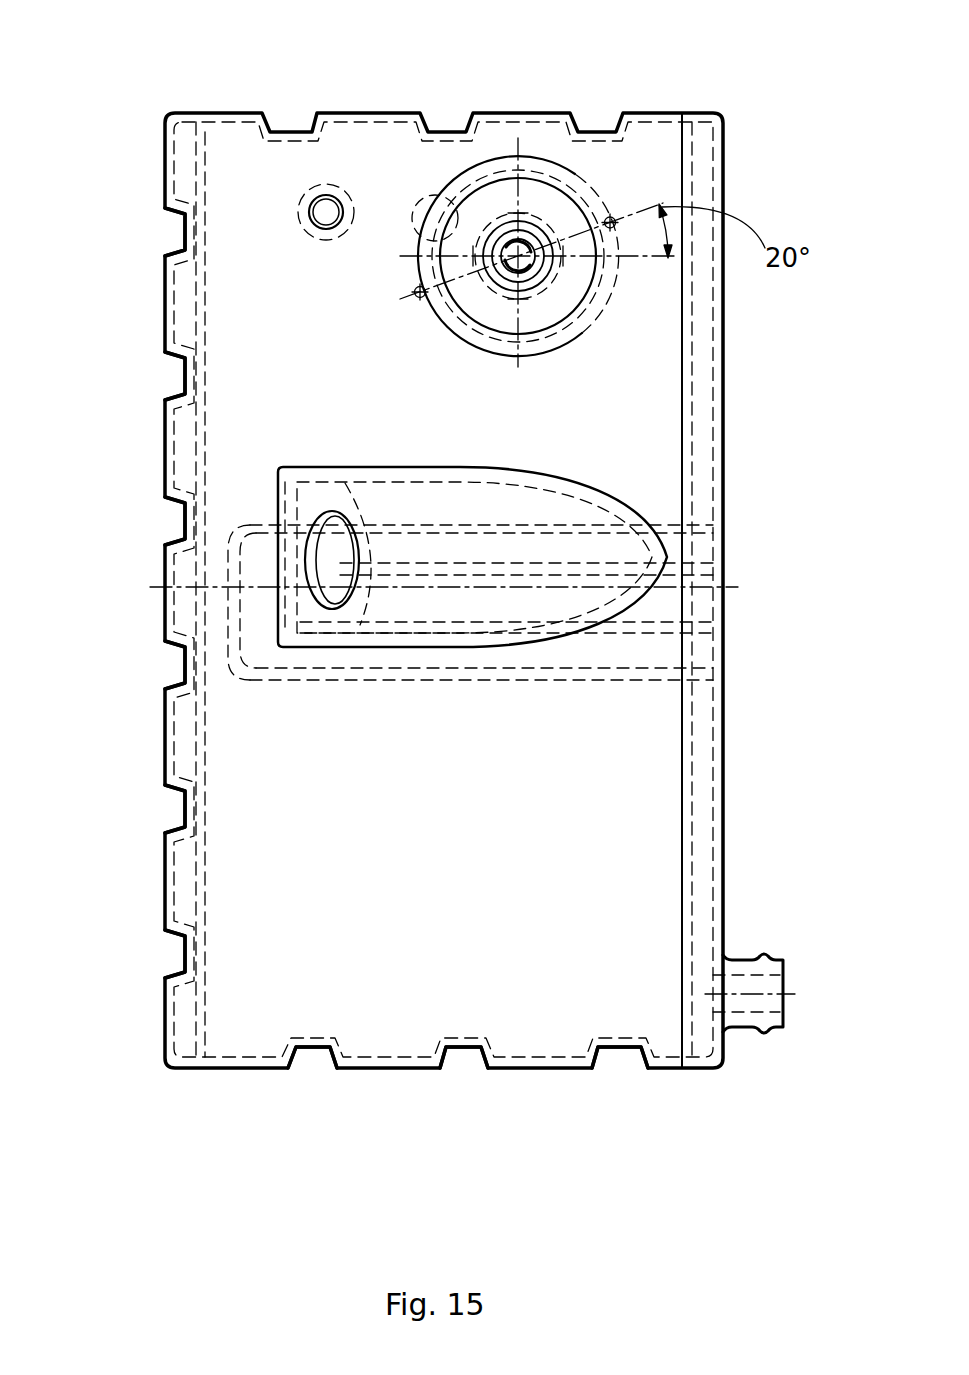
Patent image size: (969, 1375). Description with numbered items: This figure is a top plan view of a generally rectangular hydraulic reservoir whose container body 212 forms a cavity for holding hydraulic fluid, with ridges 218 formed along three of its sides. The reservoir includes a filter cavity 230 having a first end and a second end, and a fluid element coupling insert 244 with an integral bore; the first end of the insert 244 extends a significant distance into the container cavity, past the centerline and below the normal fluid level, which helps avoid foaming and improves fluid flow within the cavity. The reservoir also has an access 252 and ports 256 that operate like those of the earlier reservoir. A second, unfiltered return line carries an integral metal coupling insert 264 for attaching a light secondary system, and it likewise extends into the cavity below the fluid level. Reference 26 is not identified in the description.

The housing assembly 26 is at (346, 186).
The container body 212 is at (470, 903).
The ridges 218 is at (180, 384).
The filter cavity 230 is at (611, 215).
The fluid element coupling insert 244 is at (537, 236).
The access 252 is at (320, 550).
The ports 256 is at (752, 960).
The integral metal coupling insert 264 is at (318, 192).